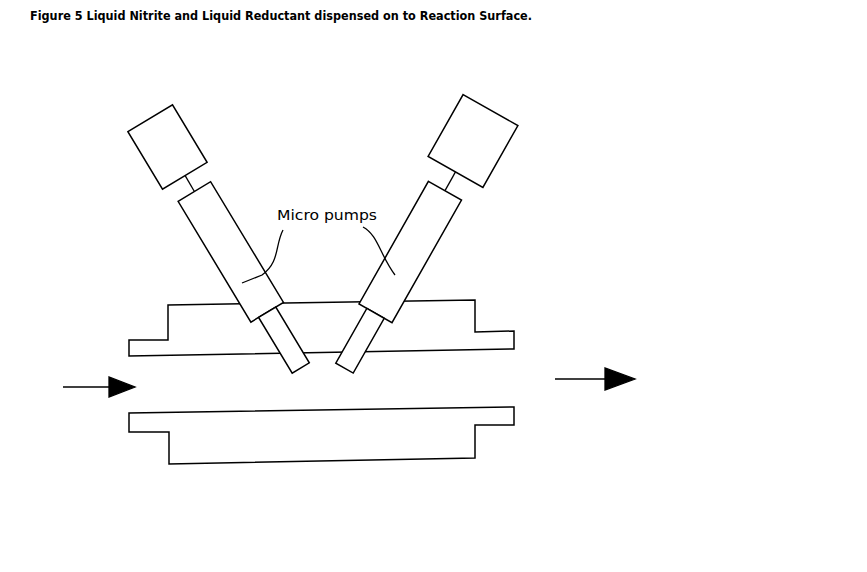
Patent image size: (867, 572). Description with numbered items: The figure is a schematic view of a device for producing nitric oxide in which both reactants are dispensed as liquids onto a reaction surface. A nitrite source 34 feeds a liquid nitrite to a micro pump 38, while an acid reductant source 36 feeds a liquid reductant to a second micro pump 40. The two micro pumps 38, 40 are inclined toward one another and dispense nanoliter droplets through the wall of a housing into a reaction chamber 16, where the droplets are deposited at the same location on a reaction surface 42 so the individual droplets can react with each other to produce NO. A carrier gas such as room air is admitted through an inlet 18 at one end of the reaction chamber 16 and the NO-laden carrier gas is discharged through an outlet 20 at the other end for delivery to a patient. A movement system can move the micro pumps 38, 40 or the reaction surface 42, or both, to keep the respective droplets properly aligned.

The reaction chamber 16 is at (415, 380).
The inlet 18 is at (140, 340).
The outlet 20 is at (168, 450).
The nitrite source 34 is at (193, 152).
The acid reductant source 36 is at (493, 155).
The micro pump 38 is at (218, 222).
The micro pump 40 is at (418, 208).
The reaction surface 42 is at (344, 409).